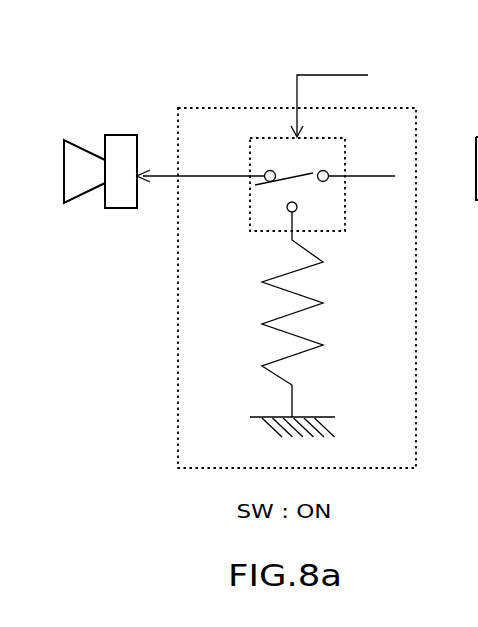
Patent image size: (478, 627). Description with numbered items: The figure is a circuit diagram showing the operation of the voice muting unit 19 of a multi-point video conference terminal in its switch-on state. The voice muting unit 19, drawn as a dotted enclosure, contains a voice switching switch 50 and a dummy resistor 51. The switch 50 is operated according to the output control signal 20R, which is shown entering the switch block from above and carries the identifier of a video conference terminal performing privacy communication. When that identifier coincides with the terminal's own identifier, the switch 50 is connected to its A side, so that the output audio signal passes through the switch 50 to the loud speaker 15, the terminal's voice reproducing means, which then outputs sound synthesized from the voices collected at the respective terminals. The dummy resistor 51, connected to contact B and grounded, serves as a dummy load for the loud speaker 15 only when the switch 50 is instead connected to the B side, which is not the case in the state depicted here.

The loud speaker 15 is at (122, 135).
The voice muting unit 19 is at (244, 107).
The output control signal 20R is at (340, 75).
The voice switching switch 50 is at (250, 229).
The dummy resistor 51 is at (323, 300).